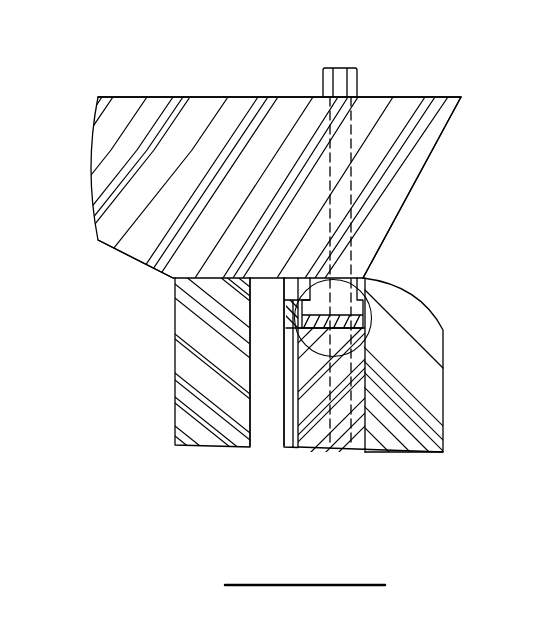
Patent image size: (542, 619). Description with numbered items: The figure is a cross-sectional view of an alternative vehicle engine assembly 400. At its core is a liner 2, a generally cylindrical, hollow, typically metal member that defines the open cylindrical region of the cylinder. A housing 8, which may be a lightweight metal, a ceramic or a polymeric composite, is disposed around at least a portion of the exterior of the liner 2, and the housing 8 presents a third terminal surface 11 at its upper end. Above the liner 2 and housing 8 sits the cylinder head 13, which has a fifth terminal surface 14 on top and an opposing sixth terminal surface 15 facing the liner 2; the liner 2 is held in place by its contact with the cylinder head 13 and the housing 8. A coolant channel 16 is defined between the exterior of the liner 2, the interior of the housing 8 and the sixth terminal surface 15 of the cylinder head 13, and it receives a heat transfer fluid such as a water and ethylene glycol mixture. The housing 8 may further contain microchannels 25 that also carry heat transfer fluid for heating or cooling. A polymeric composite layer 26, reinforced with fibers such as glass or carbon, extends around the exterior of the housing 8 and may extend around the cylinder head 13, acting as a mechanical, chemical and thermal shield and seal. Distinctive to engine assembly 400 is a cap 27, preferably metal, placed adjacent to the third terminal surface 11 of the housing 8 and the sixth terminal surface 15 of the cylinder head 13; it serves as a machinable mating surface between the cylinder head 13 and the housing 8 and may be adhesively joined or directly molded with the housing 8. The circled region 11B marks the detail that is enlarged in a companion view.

The engine assembly 400 is at (104, 74).
The cylinder head 13 is at (197, 113).
The fifth terminal surface 14 is at (148, 97).
The sixth terminal surface 15 is at (124, 252).
The liner 2 is at (185, 362).
The coolant channel 16 is at (272, 428).
The microchannels 25 is at (295, 433).
The housing 8 is at (358, 431).
The polymeric composite layer 26 is at (430, 397).
The cap 27 is at (357, 280).
The third terminal surface 11 is at (362, 292).
The detail region 11B is at (357, 292).